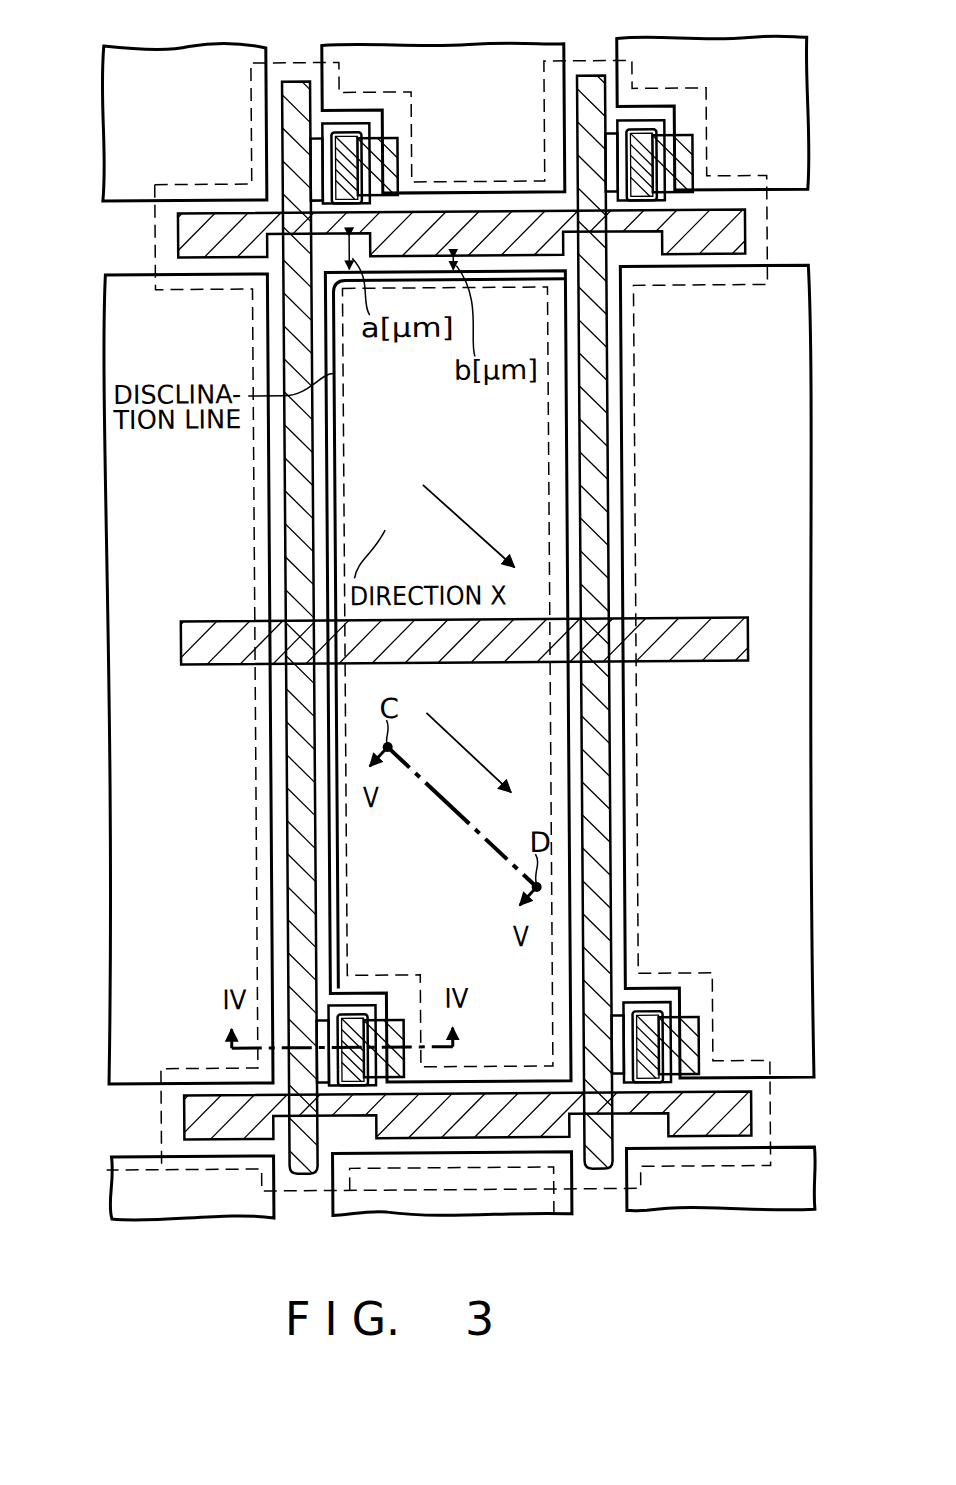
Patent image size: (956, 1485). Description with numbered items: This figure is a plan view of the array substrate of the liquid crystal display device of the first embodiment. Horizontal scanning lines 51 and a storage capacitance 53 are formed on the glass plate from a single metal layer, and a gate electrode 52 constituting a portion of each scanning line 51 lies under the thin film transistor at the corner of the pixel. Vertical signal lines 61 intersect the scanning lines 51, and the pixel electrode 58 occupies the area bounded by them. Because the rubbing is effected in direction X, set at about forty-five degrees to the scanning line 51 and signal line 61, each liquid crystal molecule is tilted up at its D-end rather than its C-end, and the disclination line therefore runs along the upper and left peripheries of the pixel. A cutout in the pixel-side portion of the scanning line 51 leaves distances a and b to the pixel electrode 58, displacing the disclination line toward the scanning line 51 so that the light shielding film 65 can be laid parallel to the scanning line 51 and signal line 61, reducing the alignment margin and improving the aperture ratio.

The signal line 61 is at (296, 88).
The scanning line 51 is at (735, 231).
The storage capacitance 53 is at (738, 636).
The light shielding film 65 is at (548, 410).
The pixel electrode 58 is at (565, 452).
The gate electrode 52 is at (362, 1003).